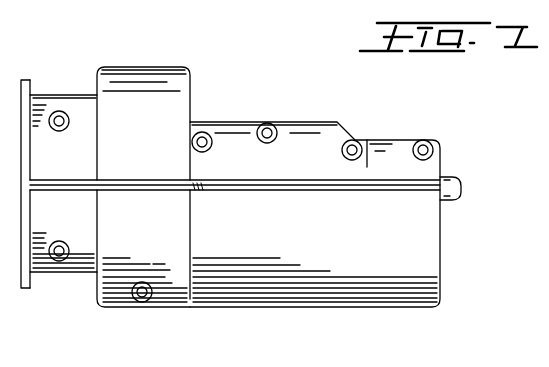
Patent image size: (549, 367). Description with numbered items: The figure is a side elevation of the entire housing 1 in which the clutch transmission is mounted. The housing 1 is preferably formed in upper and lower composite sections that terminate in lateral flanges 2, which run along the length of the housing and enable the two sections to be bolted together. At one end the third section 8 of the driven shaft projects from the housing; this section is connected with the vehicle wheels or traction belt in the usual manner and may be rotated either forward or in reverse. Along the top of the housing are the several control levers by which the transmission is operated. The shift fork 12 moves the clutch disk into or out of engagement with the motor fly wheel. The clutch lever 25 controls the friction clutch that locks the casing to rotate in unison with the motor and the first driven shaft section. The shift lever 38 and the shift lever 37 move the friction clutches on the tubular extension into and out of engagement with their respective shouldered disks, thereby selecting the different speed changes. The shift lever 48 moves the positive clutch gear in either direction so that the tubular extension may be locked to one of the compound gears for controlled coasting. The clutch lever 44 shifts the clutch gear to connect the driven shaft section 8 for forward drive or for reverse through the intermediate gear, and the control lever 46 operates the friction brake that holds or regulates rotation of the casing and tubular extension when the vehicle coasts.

The housing 1 is at (327, 120).
The lateral flanges 2 is at (312, 187).
The third section of the driven shaft 8 is at (447, 176).
The shift fork 12 is at (60, 111).
The clutch lever 25 is at (59, 261).
The shift lever 37 is at (362, 137).
The shift lever 38 is at (202, 131).
The clutch lever 44 is at (435, 138).
The control lever 46 is at (142, 302).
The shift lever 48 is at (270, 124).